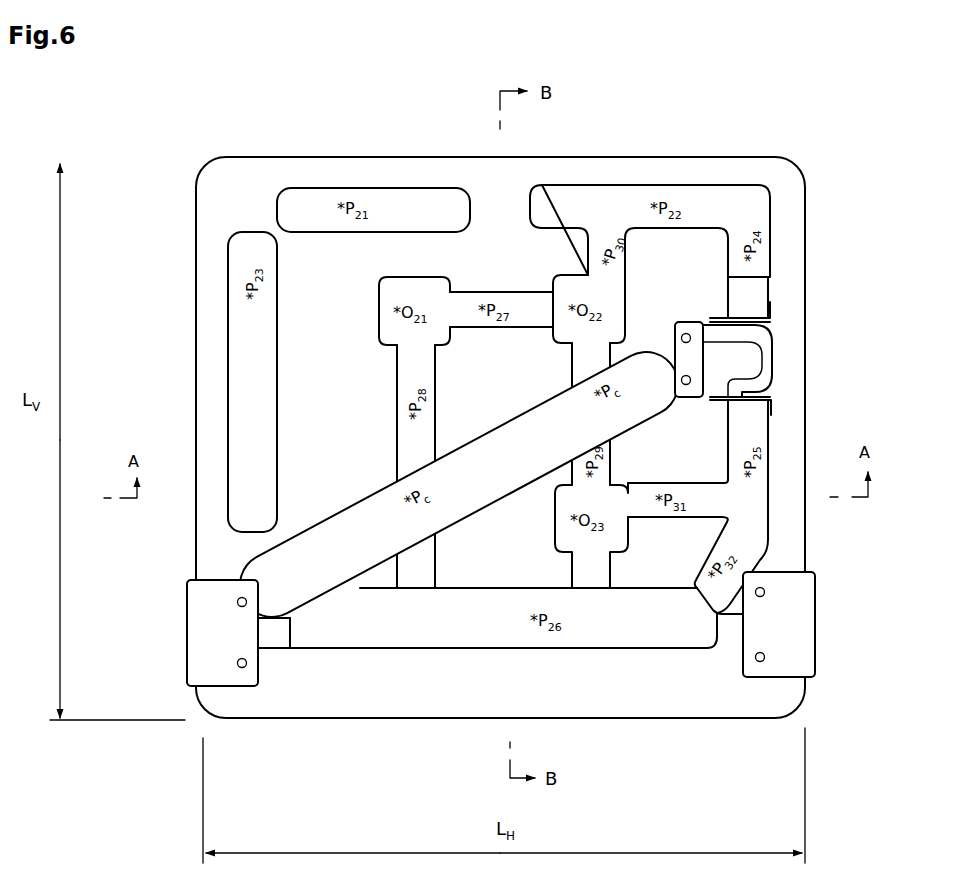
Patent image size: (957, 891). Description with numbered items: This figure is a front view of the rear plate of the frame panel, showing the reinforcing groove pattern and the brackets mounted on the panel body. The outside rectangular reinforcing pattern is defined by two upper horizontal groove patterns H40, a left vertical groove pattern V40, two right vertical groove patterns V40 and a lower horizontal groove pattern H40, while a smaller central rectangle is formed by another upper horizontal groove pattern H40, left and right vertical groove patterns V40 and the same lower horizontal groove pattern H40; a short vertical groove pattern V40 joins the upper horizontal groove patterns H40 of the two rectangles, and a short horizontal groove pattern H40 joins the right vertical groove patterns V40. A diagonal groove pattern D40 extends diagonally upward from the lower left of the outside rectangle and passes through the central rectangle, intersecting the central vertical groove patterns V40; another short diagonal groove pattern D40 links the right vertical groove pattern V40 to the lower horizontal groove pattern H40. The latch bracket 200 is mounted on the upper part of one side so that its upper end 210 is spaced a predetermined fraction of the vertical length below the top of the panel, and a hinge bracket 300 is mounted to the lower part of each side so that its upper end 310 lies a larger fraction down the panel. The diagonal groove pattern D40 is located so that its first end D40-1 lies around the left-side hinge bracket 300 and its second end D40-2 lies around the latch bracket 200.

The latch bracket 200 is at (742, 356).
The upper end of the latch bracket 210 is at (692, 320).
The hinge bracket 300 is at (195, 657).
The upper end of the hinge bracket 310 is at (200, 580).
The diagonal groove pattern D40 is at (512, 437).
The first end of the diagonal groove pattern D40-1 is at (247, 573).
The second end of the diagonal groove pattern D40-2 is at (682, 424).
The horizontal groove pattern H40 is at (463, 305).
The vertical groove pattern V40 is at (245, 385).